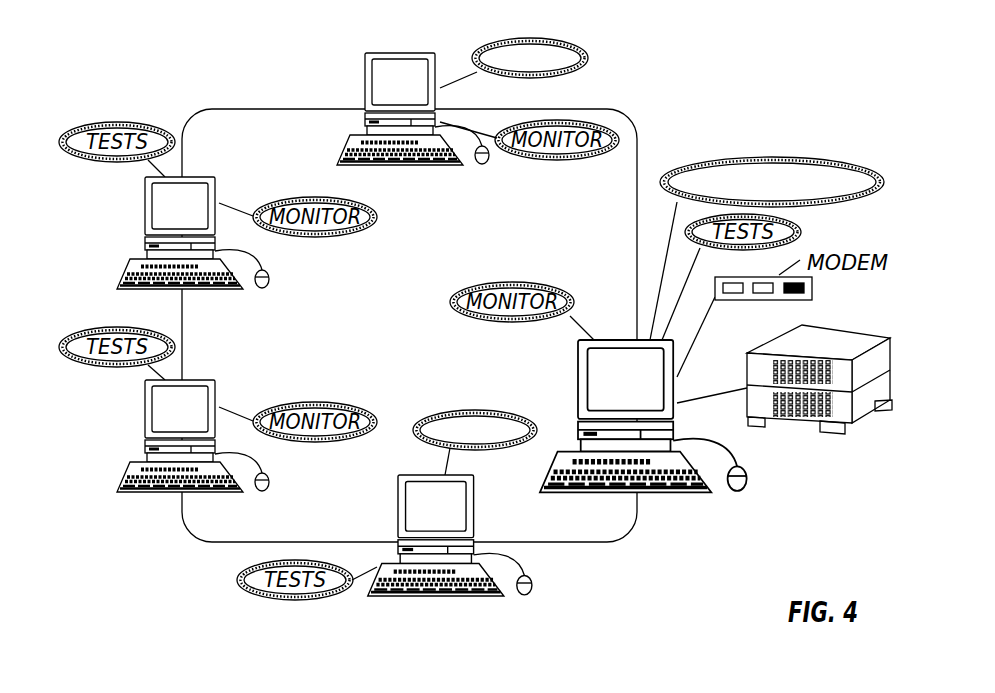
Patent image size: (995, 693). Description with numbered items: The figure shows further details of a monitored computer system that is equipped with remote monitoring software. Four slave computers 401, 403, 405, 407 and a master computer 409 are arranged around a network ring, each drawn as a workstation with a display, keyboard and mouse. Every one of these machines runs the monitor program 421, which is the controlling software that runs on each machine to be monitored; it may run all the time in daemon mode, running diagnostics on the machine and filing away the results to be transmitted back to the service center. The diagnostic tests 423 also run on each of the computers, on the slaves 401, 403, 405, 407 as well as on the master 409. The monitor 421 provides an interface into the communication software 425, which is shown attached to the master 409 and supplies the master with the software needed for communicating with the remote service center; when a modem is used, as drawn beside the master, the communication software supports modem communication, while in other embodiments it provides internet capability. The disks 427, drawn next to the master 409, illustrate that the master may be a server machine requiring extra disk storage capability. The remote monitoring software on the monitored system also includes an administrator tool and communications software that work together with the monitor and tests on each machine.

The slave 401 is at (427, 588).
The slave 403 is at (145, 415).
The slave 405 is at (145, 225).
The slave 407 is at (375, 55).
The master 409 is at (666, 490).
The monitor program 421 is at (450, 412).
The diagnostic tests 423 is at (481, 43).
The communication software 425 is at (780, 157).
The disks 427 is at (815, 428).